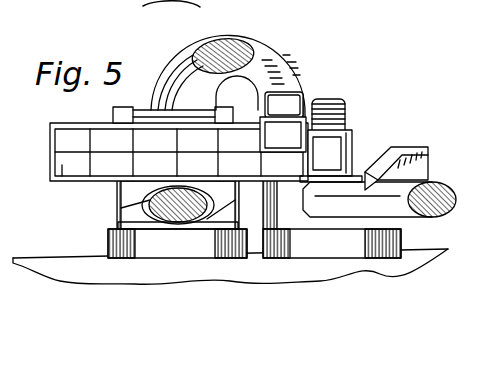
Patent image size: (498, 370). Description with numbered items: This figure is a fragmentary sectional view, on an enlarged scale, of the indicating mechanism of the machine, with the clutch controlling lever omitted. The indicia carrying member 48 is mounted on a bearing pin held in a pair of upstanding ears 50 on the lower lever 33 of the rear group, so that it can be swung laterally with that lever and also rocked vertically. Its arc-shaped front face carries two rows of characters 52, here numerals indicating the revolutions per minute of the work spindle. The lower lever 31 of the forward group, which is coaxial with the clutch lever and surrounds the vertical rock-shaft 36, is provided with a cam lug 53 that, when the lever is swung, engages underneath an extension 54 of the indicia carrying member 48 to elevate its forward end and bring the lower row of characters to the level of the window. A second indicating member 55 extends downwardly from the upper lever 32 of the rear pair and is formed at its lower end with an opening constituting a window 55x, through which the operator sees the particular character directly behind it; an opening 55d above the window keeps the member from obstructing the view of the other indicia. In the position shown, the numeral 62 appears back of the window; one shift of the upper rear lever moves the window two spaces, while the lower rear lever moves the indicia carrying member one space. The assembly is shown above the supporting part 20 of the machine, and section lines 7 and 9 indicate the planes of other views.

The section line 7- 7 is at (45, 143).
The section line 9 is at (494, 80).
The base plate 20 is at (410, 263).
The lower lever of the first or forward group 31 is at (455, 206).
The upper lever of the second or rear pair 32 is at (210, 50).
The lower lever of the second or rear group 33 is at (150, 212).
The vertical rock-shaft 36 is at (345, 109).
The indicia carrying member 48 is at (141, 109).
The upstanding ears 50 is at (113, 116).
The characters 52 is at (62, 165).
The cam lug 53 is at (400, 149).
The extension 54 is at (330, 152).
The second indicating member 55 is at (288, 65).
The opening 55d is at (285, 97).
The window 55x is at (314, 105).
The numeral 62 is at (283, 134).